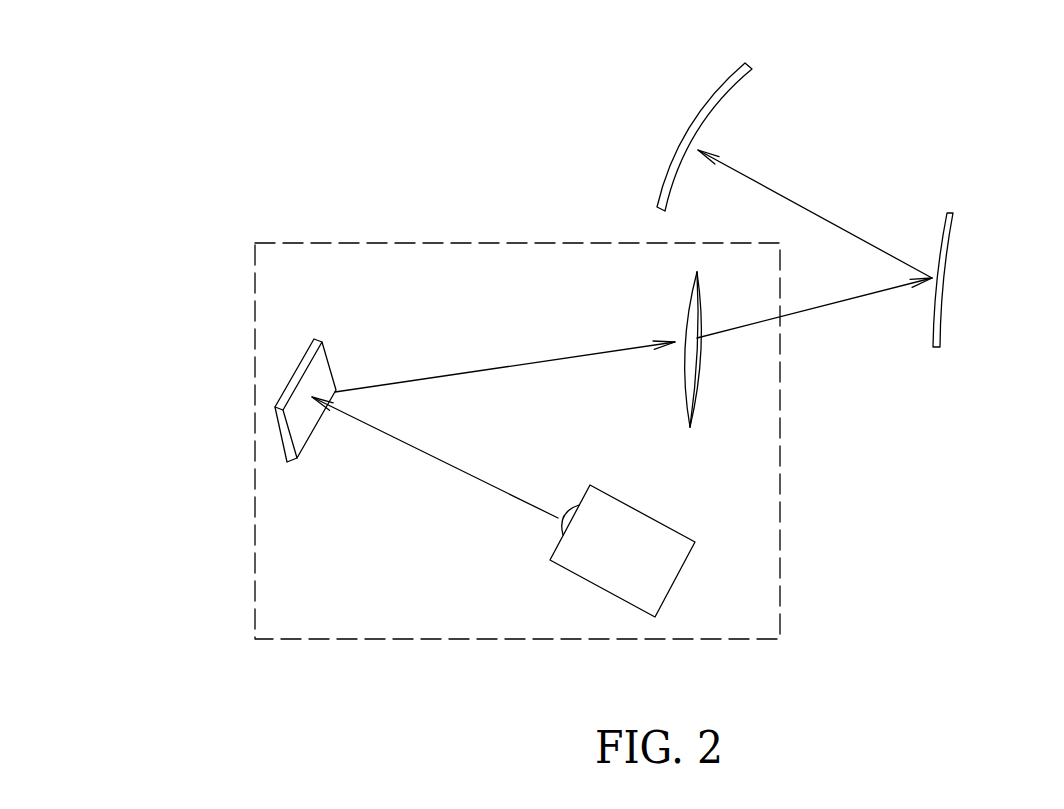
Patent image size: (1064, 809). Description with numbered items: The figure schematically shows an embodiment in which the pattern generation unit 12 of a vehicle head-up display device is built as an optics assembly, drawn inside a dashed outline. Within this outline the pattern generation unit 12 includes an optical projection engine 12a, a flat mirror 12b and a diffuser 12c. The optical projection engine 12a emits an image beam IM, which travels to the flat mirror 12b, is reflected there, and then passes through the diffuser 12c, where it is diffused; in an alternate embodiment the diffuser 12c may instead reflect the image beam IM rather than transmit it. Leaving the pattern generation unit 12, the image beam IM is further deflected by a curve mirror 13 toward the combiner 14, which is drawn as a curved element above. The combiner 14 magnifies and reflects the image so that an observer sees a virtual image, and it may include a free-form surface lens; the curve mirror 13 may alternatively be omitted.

The pattern generation unit 12 is at (302, 240).
The optical projection engine 12a is at (590, 583).
The flat mirror 12b is at (288, 378).
The diffuser 12c is at (686, 385).
The curve mirror 13 is at (940, 292).
The combiner 14 is at (697, 127).
The image beam IM is at (622, 334).